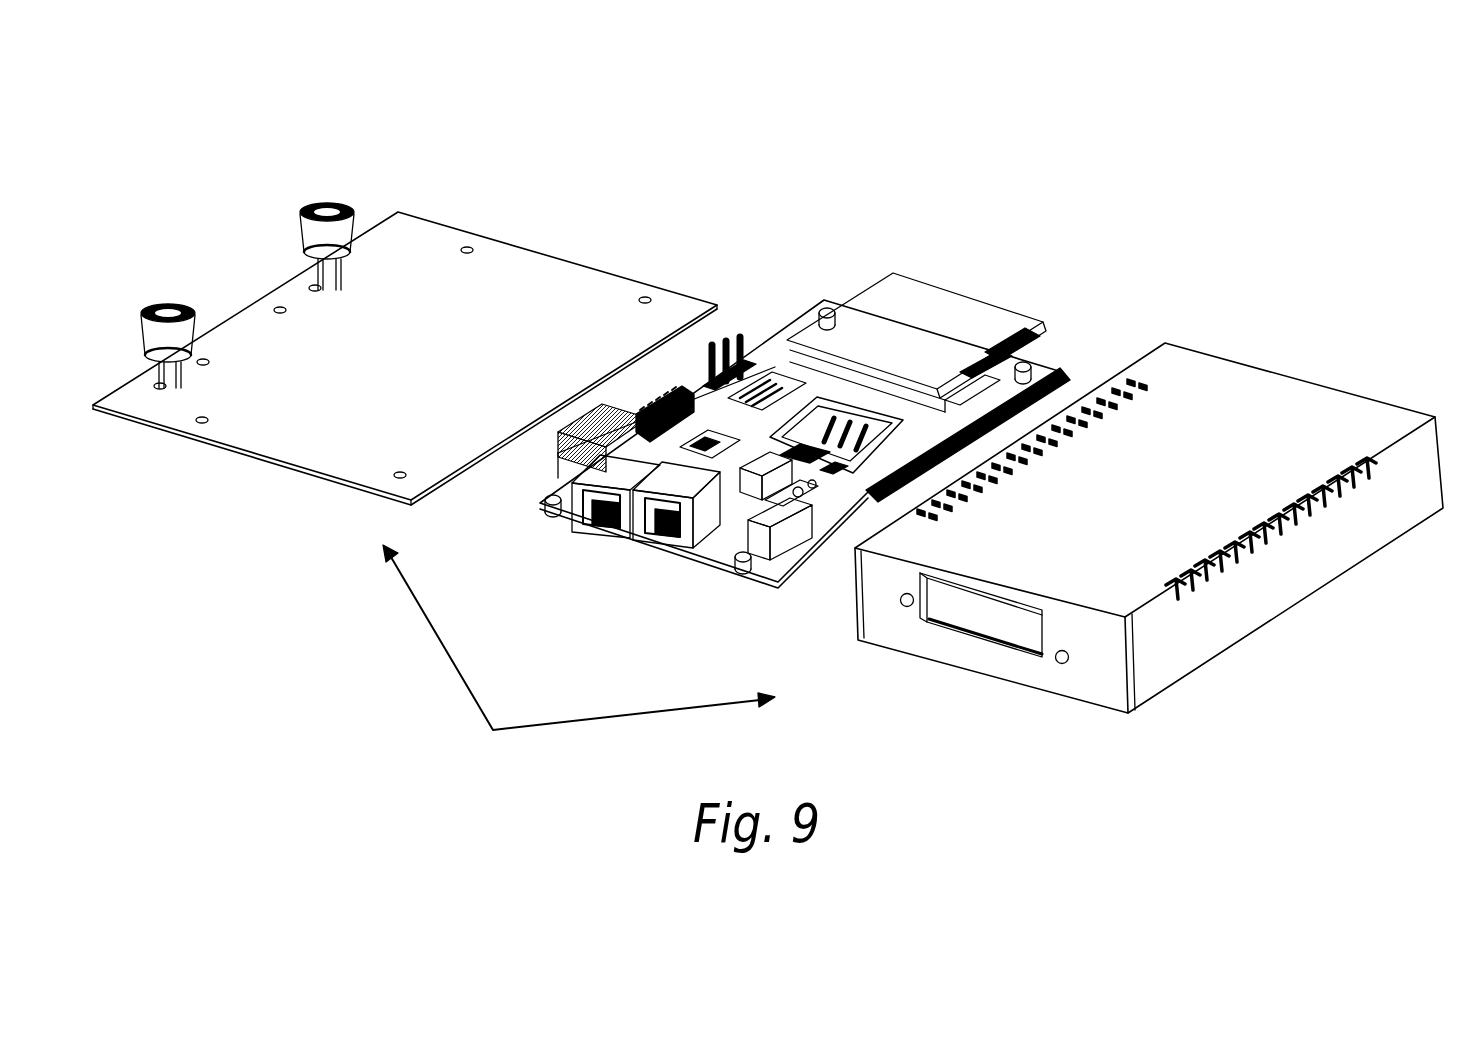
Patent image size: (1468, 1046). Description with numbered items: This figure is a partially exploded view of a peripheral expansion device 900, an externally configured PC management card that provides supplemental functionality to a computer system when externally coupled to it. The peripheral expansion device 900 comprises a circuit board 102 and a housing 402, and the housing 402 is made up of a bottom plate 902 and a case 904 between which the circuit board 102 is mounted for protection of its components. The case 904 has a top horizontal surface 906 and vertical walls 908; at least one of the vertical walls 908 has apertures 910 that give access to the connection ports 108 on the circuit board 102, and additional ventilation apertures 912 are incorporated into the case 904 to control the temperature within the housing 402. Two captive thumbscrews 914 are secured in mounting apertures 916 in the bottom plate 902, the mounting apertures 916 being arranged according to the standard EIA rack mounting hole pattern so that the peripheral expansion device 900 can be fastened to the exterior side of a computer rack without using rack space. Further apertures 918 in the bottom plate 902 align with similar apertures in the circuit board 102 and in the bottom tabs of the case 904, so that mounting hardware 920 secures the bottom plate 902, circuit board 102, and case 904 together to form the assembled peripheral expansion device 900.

The peripheral expansion device 900 is at (960, 118).
The bottom plate 902 is at (405, 346).
The case 904 is at (1149, 513).
The top horizontal surface 906 is at (1138, 487).
The vertical walls 908 is at (962, 675).
The apertures 910 is at (985, 661).
The ventilation apertures 912 is at (1182, 451).
The captive thumbscrews 914 is at (241, 251).
The mounting apertures 916 is at (237, 300).
The apertures 918 is at (423, 362).
The mounting hardware 920 is at (765, 436).
The circuit board 102 is at (805, 430).
The connection ports 108 is at (641, 536).
The housing 402 is at (579, 652).